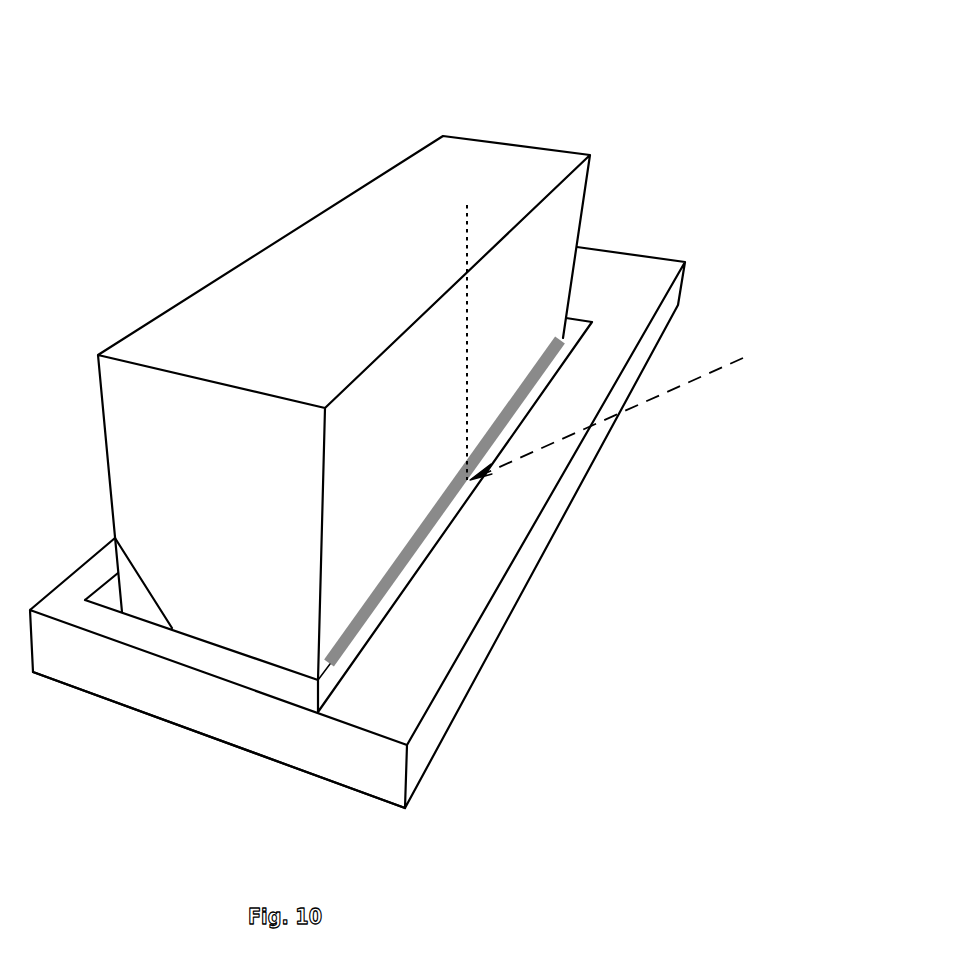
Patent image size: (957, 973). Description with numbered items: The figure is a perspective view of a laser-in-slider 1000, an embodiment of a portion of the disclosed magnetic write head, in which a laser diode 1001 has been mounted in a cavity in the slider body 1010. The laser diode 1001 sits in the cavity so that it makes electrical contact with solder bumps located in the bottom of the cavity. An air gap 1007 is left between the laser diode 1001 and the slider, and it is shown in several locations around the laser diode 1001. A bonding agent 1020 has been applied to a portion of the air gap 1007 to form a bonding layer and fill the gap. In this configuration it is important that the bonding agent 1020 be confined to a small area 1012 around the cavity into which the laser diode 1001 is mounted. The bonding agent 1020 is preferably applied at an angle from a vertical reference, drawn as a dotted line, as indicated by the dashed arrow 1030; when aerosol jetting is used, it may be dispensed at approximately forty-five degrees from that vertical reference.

The laser-in-slider 1000 is at (268, 54).
The laser diode 1001 is at (458, 177).
The air gap 1007 is at (563, 337).
The slider body 1010 is at (470, 687).
The area 1012 is at (300, 693).
The bonding agent 1020 is at (442, 512).
The dashed arrow 1030 is at (640, 405).